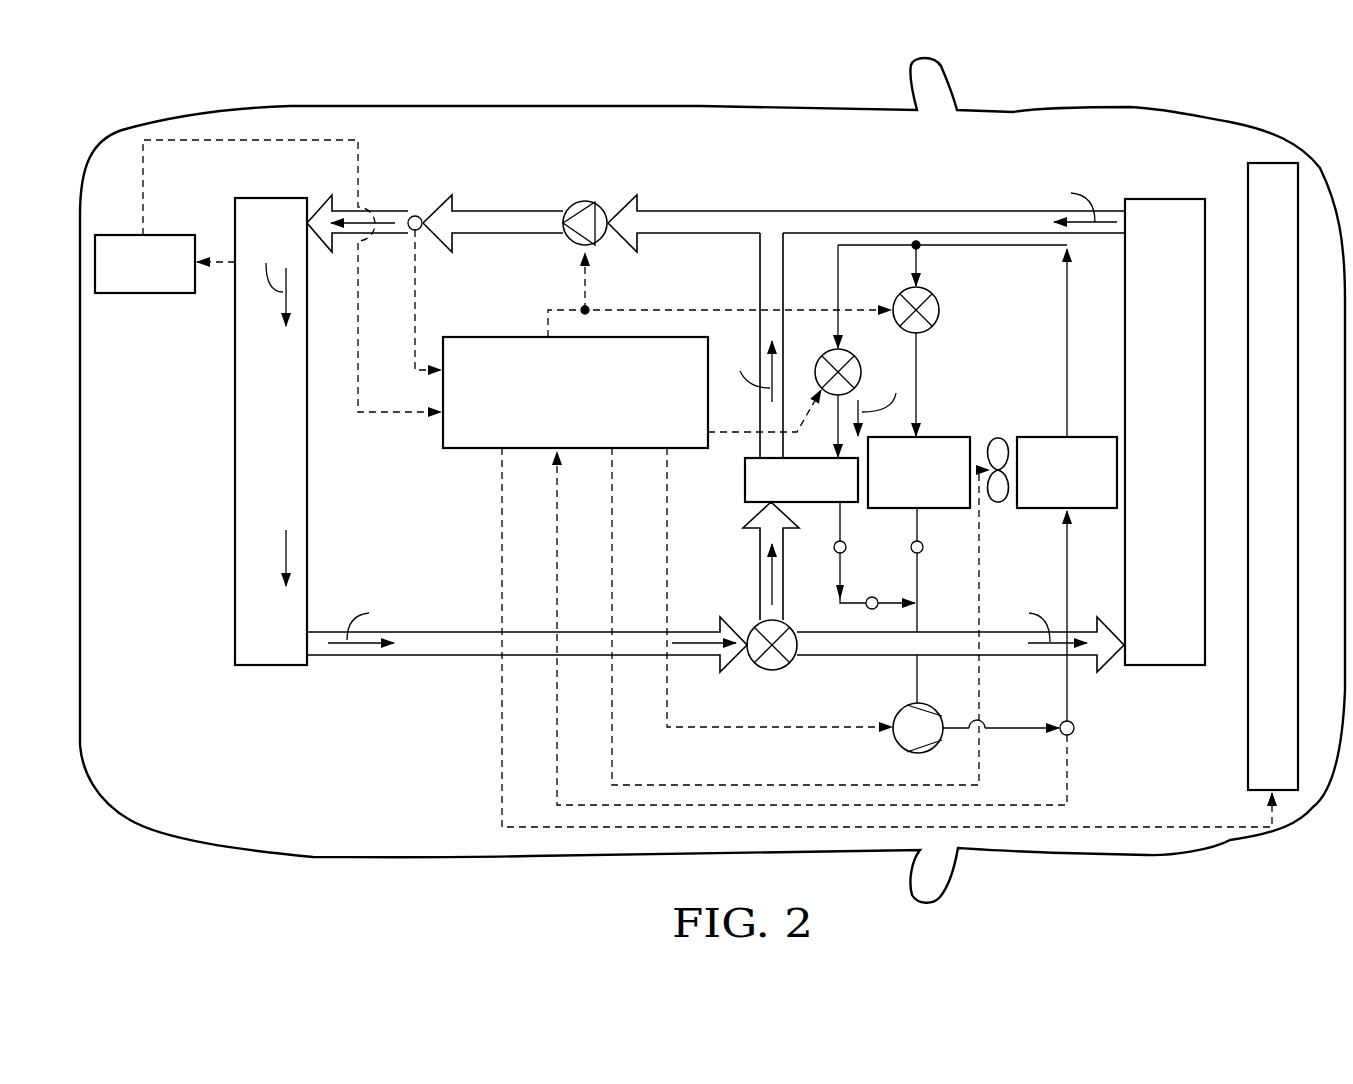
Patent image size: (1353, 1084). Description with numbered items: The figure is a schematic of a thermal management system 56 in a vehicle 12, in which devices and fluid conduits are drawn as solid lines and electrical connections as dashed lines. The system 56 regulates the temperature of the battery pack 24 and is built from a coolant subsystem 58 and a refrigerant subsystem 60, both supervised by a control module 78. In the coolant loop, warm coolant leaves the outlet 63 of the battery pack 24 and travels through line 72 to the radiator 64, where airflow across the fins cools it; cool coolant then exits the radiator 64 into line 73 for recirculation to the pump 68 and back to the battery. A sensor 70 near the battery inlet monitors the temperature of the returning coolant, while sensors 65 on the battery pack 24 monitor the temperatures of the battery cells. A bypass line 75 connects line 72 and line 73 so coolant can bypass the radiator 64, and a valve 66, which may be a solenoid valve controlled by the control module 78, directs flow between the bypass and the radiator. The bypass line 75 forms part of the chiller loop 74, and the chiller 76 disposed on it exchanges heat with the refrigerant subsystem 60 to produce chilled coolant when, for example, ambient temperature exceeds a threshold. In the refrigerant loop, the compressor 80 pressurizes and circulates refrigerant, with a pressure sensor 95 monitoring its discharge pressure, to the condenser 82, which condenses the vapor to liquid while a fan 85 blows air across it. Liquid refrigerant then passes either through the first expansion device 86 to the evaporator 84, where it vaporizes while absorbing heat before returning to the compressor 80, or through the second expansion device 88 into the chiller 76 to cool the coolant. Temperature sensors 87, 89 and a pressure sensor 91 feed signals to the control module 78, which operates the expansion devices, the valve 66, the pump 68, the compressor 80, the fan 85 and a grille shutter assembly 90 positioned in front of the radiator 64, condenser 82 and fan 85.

The vehicle 12 is at (710, 104).
The battery pack 24 is at (259, 482).
The thermal management system 56 is at (674, 182).
The coolant subsystem 58 is at (469, 690).
The refrigerant subsystem 60 is at (950, 386).
The outlet 63 is at (319, 679).
The radiator 64 is at (1153, 457).
The sensors 65 is at (158, 235).
The valve 66 is at (772, 670).
The pump 68 is at (585, 200).
The sensor 70 is at (415, 215).
The line 72 is at (418, 632).
The line 73 is at (882, 210).
The chiller loop 74 is at (705, 540).
The bypass line 75 is at (758, 603).
The chiller 76 is at (745, 480).
The control module 78 is at (569, 422).
The compressor 80 is at (897, 713).
The condenser 82 is at (1078, 437).
The evaporator 84 is at (935, 437).
The fan 85 is at (998, 437).
The first expansion device 86 is at (940, 310).
The temperature sensor 87 is at (924, 547).
The second expansion device 88 is at (816, 372).
The temperature sensor 89 is at (872, 597).
The grille shutter assembly 90 is at (1261, 477).
The pressure sensor 91 is at (833, 547).
The pressure sensor 95 is at (1075, 728).